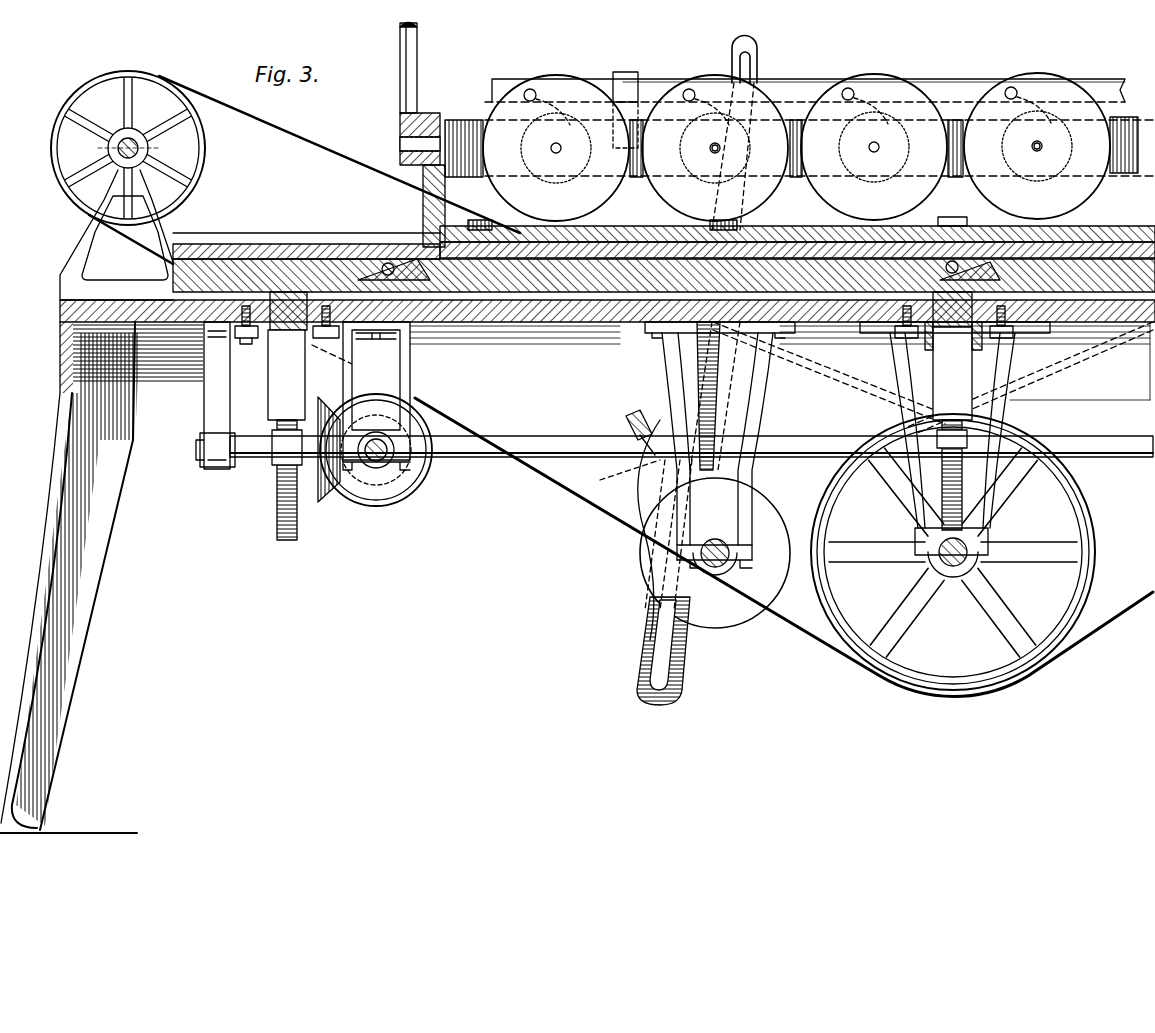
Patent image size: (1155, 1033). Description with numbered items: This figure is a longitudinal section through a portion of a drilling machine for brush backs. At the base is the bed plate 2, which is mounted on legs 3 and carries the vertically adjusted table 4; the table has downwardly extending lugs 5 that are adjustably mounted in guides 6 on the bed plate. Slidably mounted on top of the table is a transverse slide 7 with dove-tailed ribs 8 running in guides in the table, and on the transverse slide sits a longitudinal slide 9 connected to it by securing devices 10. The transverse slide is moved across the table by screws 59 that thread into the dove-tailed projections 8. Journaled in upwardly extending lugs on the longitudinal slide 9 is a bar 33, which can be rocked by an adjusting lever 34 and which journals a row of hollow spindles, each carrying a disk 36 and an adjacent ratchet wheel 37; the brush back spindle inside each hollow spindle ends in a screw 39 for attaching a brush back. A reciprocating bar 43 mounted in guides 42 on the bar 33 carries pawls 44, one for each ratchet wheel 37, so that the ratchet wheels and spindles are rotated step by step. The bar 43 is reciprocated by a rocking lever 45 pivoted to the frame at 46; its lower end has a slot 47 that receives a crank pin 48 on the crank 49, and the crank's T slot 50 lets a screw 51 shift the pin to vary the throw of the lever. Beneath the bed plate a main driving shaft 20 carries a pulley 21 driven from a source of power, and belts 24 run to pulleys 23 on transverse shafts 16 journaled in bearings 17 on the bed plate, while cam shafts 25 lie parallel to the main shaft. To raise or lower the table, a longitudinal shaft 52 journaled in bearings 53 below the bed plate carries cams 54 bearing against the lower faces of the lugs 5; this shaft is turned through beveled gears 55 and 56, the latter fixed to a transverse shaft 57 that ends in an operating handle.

The bed plate 2 is at (62, 311).
The legs 3 is at (80, 468).
The vertically adjusted table 4 is at (225, 262).
The downwardly extending lugs 5 is at (625, 371).
The guides 6 is at (312, 345).
The transverse slide 7 is at (264, 250).
The dove-tailed ribs 8 is at (380, 268).
The longitudinal slide 9 is at (790, 240).
The securing devices 10 is at (480, 220).
The transverse shafts 16 is at (120, 140).
The bearings 17 is at (86, 240).
The main driving shaft 20 is at (955, 572).
The pulley 21 is at (1092, 556).
The pulleys 23 is at (62, 170).
The belts 24 is at (348, 158).
The cam shafts 25 is at (712, 568).
The bar 33 is at (462, 128).
The adjusting lever 34 is at (400, 97).
The disk 36 is at (612, 188).
The ratchet wheel 37 is at (796, 160).
The screw 39 is at (720, 148).
The guides 42 is at (625, 78).
The reciprocating bar 43 is at (806, 90).
The pawls 44 is at (560, 110).
The rocking lever 45 is at (758, 50).
The pivot 46 is at (722, 324).
The slot 47 is at (656, 620).
The crank pin 48 is at (656, 498).
The crank 49 is at (765, 512).
The T slot 50 is at (605, 478).
The screw 51 is at (680, 430).
The longitudinal shaft 52 is at (553, 446).
The bearings 53 is at (213, 396).
The cams 54 is at (287, 522).
The beveled gear 55 is at (324, 492).
The beveled gear 56 is at (380, 500).
The transverse shaft 57 is at (392, 462).
The screws 59 is at (390, 262).